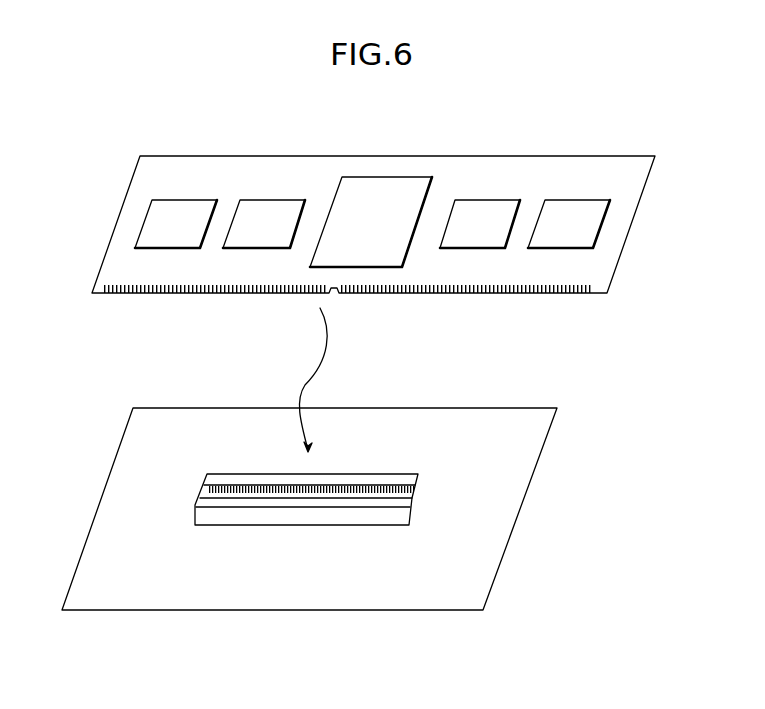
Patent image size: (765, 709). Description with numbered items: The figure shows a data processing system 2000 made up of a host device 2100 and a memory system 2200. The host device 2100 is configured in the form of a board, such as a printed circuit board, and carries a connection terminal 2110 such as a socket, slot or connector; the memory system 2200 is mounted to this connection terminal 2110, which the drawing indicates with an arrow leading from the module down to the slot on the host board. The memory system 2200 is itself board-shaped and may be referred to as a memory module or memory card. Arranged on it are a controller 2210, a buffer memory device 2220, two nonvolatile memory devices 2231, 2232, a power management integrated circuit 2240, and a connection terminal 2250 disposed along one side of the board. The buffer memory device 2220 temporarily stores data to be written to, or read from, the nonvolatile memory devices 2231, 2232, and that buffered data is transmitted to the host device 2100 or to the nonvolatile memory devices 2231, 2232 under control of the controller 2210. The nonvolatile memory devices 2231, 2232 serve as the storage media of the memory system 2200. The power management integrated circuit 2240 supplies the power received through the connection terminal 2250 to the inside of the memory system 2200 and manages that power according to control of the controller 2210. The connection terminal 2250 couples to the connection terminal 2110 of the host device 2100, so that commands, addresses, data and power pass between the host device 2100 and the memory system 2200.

The data processing system 2000 is at (232, 126).
The memory system 2200 is at (373, 224).
The controller 2210 is at (371, 222).
The buffer memory device 2220 is at (264, 224).
The nonvolatile memory device 2231 is at (480, 224).
The nonvolatile memory device 2232 is at (569, 224).
The power management integrated circuit 2240 is at (176, 224).
The connection terminal 2250 is at (122, 294).
The host device 2100 is at (309, 509).
The connection terminal 2110 is at (438, 469).